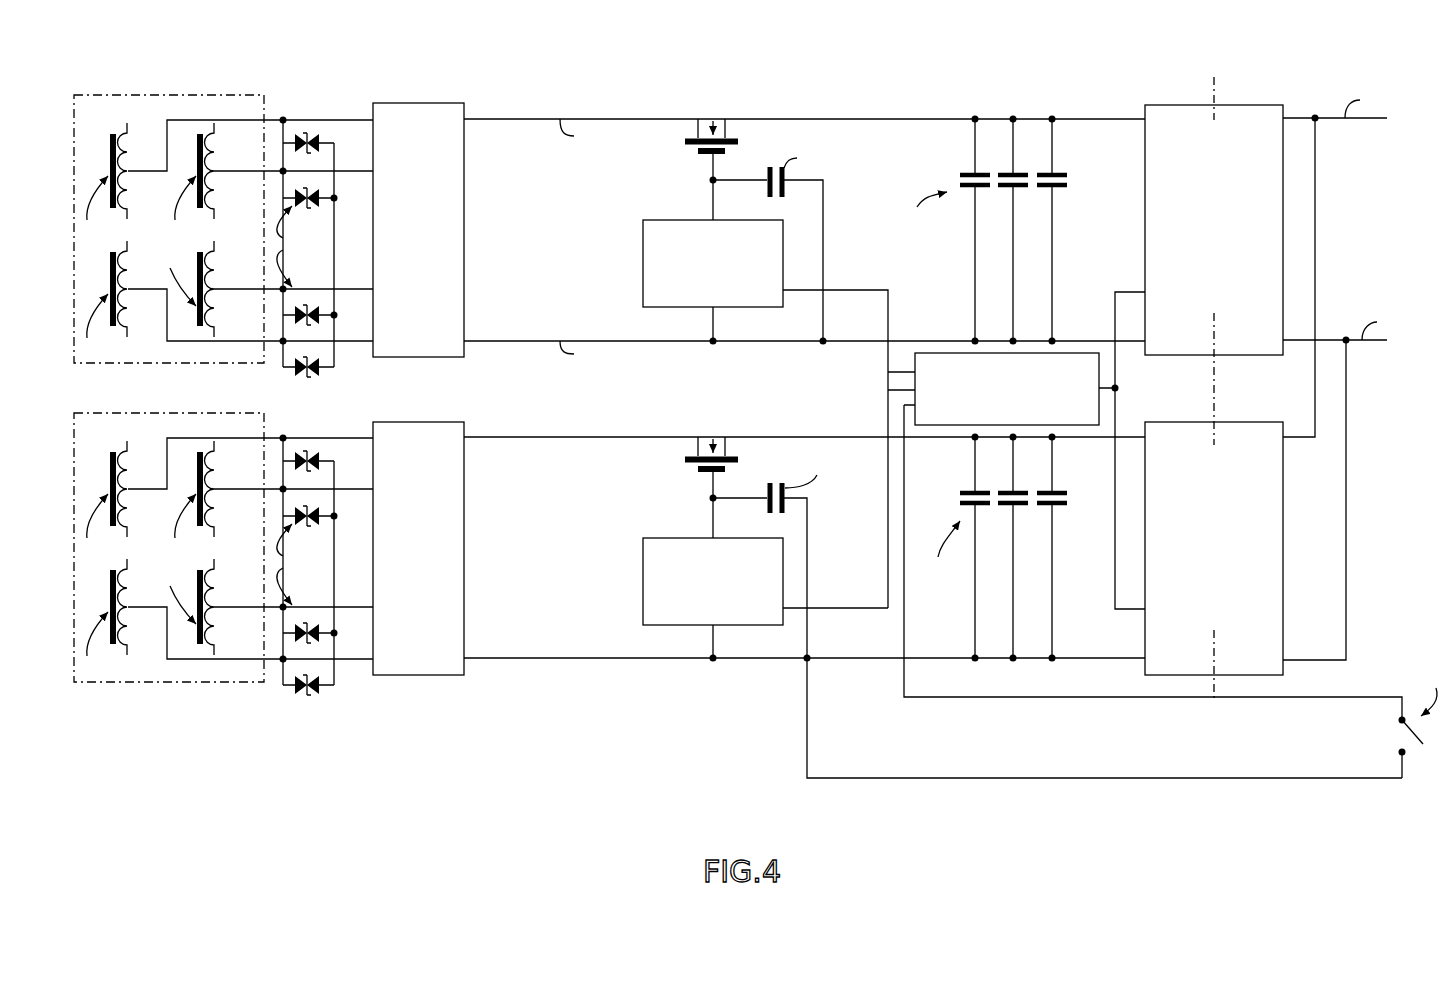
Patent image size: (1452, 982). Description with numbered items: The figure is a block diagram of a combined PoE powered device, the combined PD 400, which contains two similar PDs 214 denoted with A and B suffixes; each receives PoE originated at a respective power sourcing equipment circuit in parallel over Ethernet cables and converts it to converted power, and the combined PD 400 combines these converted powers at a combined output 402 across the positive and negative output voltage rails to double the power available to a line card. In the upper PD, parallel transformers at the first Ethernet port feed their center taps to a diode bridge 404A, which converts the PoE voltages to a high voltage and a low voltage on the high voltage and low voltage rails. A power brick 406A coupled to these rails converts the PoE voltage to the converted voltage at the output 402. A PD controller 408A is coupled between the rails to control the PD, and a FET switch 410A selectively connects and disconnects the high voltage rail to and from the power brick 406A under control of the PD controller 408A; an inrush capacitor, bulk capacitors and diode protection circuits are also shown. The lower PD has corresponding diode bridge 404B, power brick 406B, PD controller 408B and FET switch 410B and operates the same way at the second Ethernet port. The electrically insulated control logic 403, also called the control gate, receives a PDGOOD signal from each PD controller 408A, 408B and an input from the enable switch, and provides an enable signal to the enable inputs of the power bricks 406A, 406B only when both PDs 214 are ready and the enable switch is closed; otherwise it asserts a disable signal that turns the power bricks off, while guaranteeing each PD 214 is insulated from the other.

The combined PD 400 is at (1270, 40).
The PD 214 is at (528, 70).
The combined output 402 is at (1363, 140).
The electrically insulated control logic 403 is at (915, 378).
The diode bridge 404A is at (464, 213).
The diode bridge 404B is at (464, 508).
The power brick 406A is at (1173, 105).
The power brick 406B is at (1190, 422).
The PD controller 408A is at (643, 247).
The PD controller 408B is at (643, 562).
The FET switch 410A is at (706, 106).
The FET switch 410B is at (700, 431).